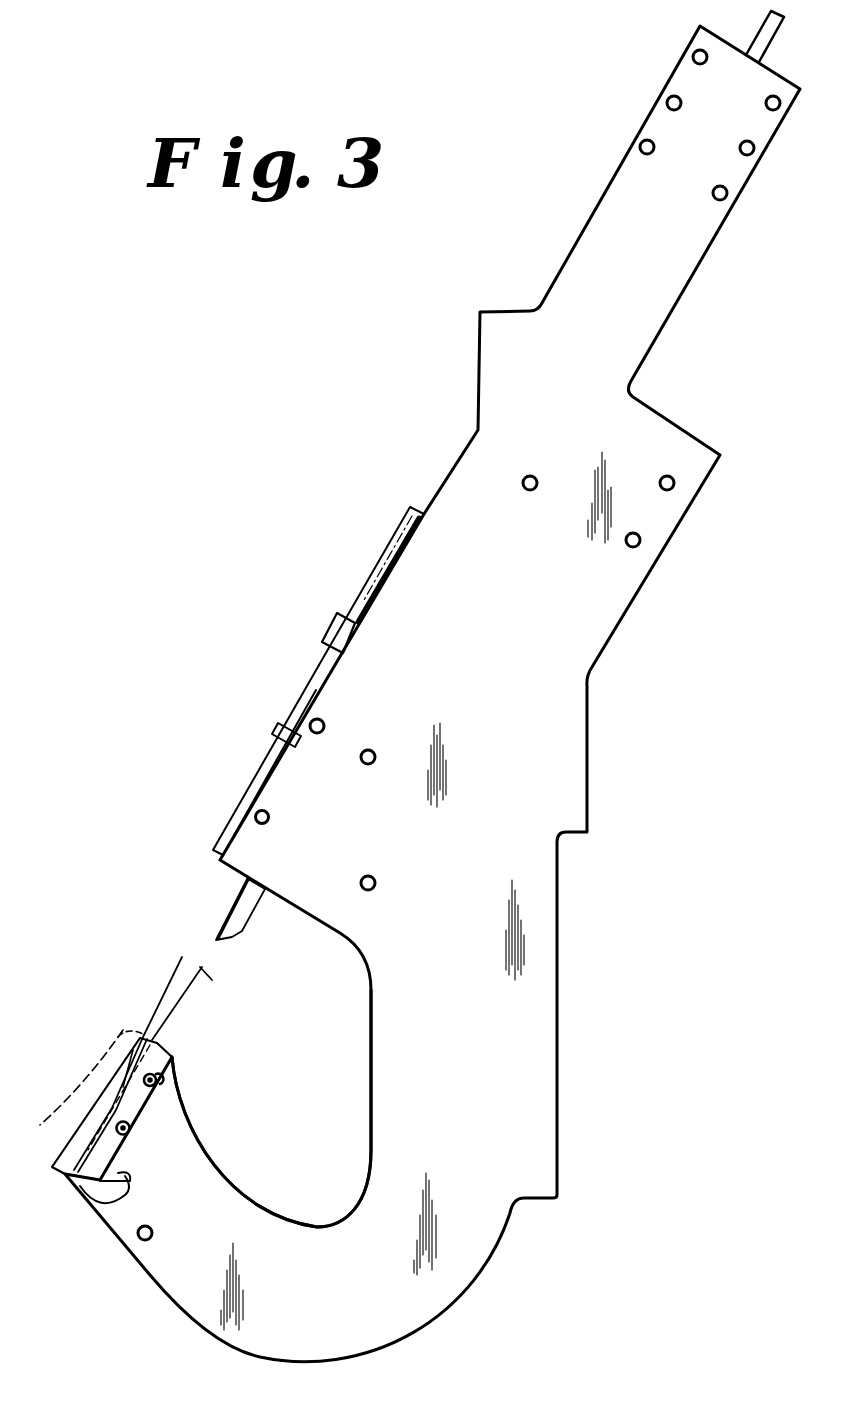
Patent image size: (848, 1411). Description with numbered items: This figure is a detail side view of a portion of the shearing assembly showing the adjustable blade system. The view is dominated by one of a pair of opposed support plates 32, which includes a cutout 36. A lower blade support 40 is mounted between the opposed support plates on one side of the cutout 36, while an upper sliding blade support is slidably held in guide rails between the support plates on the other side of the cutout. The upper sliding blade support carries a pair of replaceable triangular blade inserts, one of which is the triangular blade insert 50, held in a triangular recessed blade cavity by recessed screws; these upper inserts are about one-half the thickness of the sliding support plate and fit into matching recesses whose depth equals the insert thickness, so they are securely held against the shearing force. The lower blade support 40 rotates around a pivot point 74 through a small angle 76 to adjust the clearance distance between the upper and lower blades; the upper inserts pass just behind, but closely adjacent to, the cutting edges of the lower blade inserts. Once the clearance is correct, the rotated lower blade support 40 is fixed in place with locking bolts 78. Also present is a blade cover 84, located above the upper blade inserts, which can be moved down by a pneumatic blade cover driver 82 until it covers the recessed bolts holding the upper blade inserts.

The support plate 32 is at (455, 925).
The cutout 36 is at (371, 1130).
The lower blade support 40 is at (82, 1138).
The triangular blade insert 50 is at (223, 922).
The pivot point 74 is at (127, 1147).
The small angle 76 is at (182, 957).
The locking bolts 78 is at (160, 1076).
The pneumatic blade cover driver 82 is at (370, 573).
The blade cover 84 is at (250, 797).